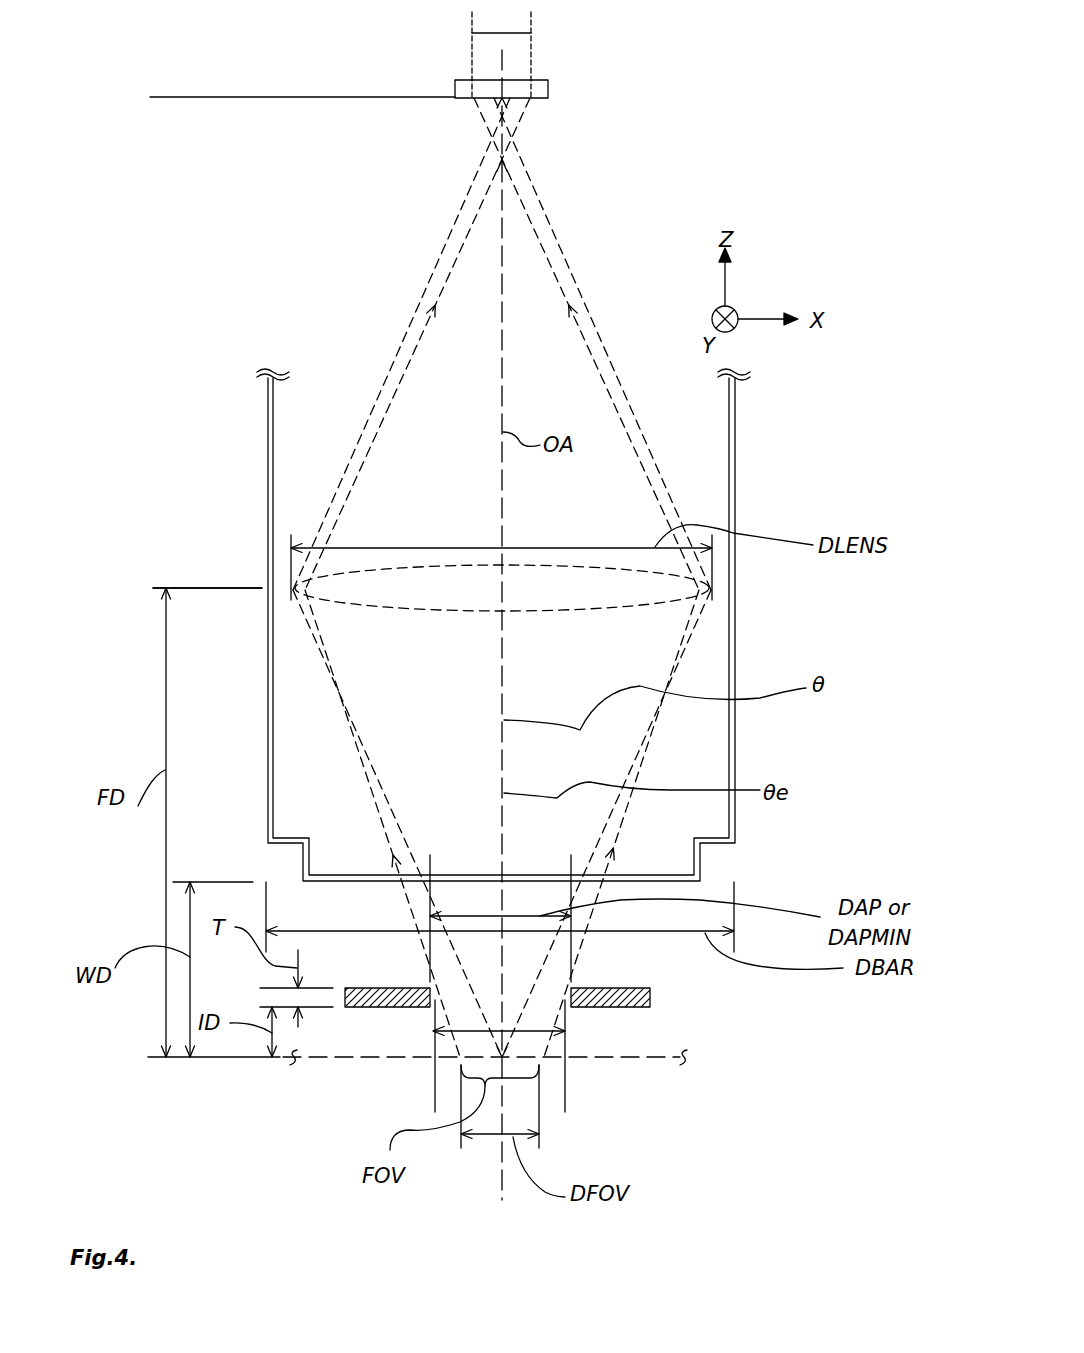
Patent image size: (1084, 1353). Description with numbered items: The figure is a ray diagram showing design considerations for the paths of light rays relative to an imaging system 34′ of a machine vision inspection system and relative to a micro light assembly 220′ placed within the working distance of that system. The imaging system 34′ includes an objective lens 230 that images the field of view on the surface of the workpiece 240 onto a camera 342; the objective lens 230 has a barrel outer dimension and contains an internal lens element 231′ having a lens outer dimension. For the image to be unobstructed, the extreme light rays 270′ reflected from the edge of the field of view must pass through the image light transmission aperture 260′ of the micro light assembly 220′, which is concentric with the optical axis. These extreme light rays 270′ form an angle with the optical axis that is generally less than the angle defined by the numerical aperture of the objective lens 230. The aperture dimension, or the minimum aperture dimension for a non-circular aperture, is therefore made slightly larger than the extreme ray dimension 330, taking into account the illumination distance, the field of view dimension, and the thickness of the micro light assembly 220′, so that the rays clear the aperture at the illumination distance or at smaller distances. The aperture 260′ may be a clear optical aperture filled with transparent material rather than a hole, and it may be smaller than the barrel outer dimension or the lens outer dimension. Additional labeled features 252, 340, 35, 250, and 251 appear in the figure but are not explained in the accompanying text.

The detector plane line 252 is at (247, 97).
The detector 340 is at (513, 25).
The camera 342 is at (548, 90).
The imaging system 34′ is at (766, 137).
The housing 35 is at (736, 430).
The objective lens 230 is at (738, 493).
The internal lens element 231′ is at (625, 625).
The lens focal plane 250 is at (193, 588).
The extreme light rays 270′ is at (357, 762).
The image light transmission aperture 260′ is at (516, 986).
The micro light assembly 220′ is at (653, 995).
The sample plane 251 is at (219, 1060).
The workpiece 240 is at (362, 1059).
The extreme ray dimension 330 is at (525, 1030).